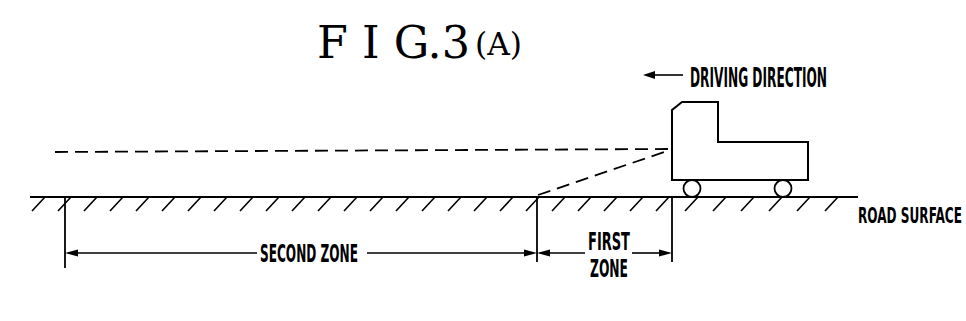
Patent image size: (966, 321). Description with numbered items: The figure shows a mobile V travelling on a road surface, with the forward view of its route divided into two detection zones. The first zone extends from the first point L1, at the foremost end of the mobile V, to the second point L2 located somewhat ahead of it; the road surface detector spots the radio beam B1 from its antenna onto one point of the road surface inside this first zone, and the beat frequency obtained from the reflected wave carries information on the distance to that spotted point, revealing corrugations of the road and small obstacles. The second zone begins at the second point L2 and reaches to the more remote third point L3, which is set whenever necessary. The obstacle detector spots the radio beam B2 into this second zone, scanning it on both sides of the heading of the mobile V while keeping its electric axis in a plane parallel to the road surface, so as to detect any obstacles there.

The mobile V is at (785, 149).
The radio beam B1 is at (590, 177).
The radio beam B2 is at (183, 152).
The first point L1 is at (676, 256).
The second point L2 is at (538, 257).
The third point L3 is at (68, 259).